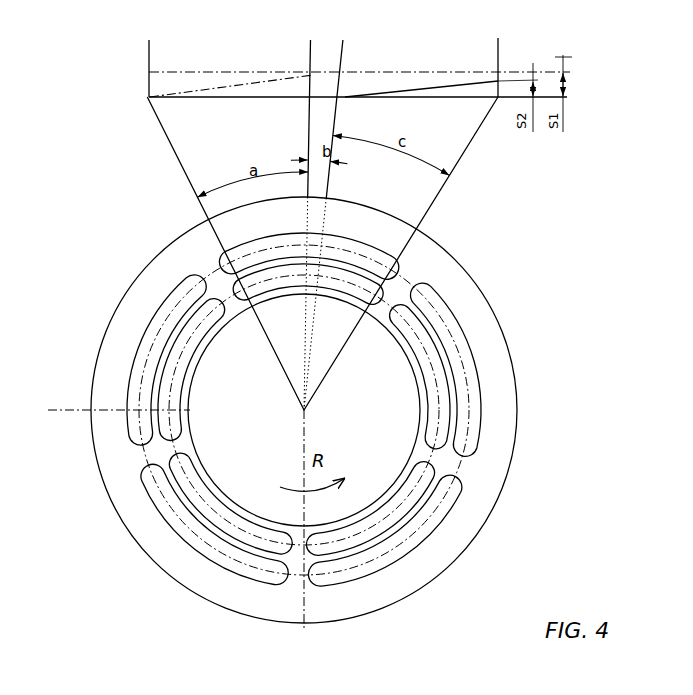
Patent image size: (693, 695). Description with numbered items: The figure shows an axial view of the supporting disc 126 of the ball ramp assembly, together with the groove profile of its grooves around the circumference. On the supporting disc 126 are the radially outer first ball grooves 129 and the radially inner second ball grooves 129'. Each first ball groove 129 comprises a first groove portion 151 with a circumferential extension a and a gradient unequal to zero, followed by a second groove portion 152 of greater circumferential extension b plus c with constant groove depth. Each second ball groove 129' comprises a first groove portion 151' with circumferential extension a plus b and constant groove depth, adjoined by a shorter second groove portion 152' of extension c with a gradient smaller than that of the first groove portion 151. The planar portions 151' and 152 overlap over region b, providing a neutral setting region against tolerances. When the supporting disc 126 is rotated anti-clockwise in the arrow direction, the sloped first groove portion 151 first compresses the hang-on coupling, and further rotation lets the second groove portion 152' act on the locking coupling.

The supporting disc 126 is at (94, 246).
The first ball grooves 129 is at (332, 430).
The second ball grooves 129' is at (361, 427).
The first groove portion 151 is at (274, 155).
The first groove portion 151' is at (308, 170).
The second groove portion 152 is at (441, 135).
The second groove portion 152' is at (396, 173).